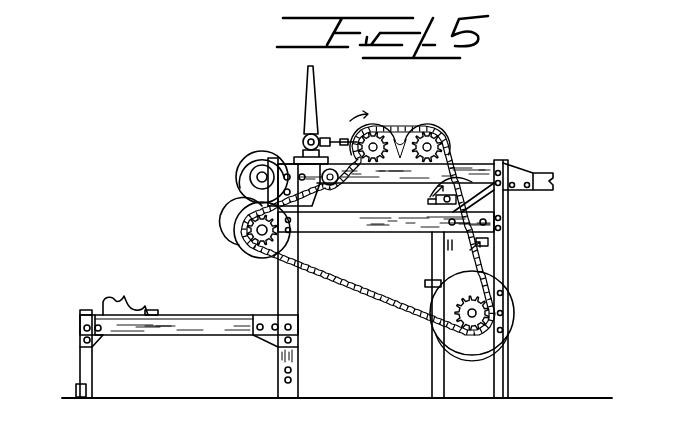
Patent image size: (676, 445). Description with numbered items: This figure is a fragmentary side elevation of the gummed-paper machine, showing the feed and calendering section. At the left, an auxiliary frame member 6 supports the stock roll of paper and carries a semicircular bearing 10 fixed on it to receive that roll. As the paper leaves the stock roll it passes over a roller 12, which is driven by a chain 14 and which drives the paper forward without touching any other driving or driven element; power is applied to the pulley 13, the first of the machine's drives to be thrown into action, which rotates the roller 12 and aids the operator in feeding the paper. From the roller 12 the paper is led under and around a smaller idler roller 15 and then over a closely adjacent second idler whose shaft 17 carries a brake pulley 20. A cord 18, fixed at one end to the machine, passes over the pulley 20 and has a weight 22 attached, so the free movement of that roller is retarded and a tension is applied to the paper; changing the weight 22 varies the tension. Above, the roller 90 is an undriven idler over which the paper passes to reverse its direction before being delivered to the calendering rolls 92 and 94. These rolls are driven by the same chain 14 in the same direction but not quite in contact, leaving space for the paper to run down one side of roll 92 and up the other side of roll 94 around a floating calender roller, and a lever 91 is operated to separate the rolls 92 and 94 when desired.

The auxiliary frame member 6 is at (148, 327).
The semicircular bearing 10 is at (112, 298).
The roller 12 is at (237, 241).
The drive pulley 13 is at (514, 312).
The chain 14 is at (353, 288).
The idler roller 15 is at (480, 254).
The shaft 17 is at (434, 202).
The cord 18 is at (474, 196).
The pulley 20 is at (433, 213).
The weight 22 is at (425, 283).
The roller 90 is at (240, 167).
The lever 91 is at (307, 88).
The calendering roll 92 is at (371, 128).
The calendering roll 94 is at (432, 128).